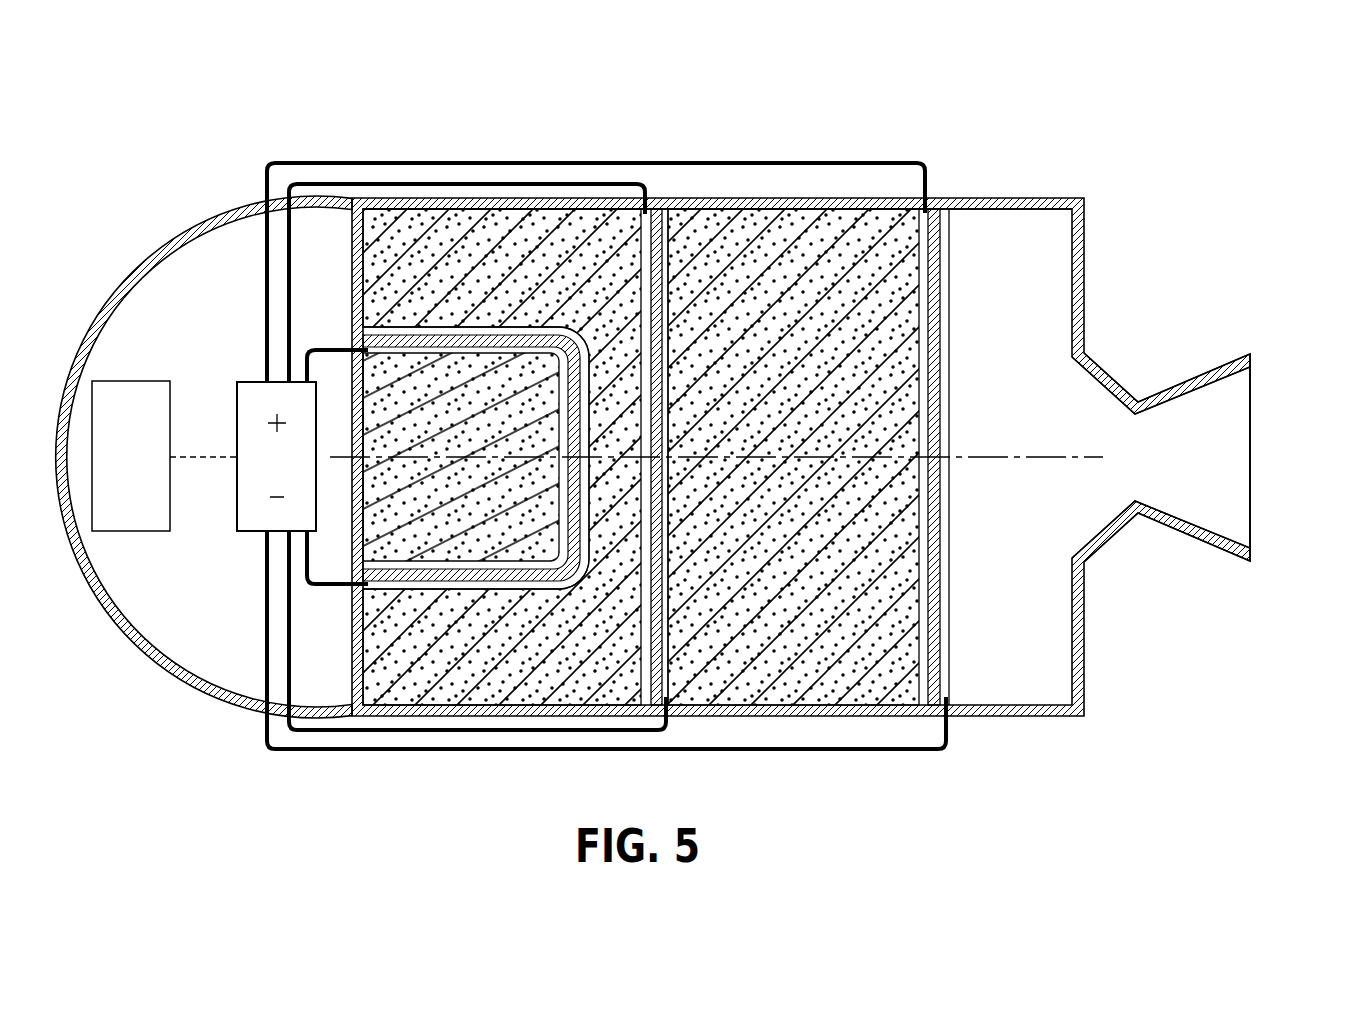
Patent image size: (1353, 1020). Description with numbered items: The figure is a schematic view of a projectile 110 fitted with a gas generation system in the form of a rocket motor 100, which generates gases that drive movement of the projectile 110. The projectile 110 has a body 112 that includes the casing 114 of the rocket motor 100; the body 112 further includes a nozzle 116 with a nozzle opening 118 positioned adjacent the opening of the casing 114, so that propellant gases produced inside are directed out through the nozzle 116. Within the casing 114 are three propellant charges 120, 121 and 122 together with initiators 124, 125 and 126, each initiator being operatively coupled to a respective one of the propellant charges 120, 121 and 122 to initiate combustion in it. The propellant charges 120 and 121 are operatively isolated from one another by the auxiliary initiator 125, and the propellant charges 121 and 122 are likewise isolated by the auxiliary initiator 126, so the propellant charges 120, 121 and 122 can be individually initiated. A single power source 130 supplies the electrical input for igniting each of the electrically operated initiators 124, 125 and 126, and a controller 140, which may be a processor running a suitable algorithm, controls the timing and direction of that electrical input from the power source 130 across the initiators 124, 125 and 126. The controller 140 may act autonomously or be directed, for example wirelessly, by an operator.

The rocket motor 100 is at (703, 421).
The projectile 110 is at (703, 421).
The body 112 is at (1025, 199).
The casing 114 is at (743, 210).
The nozzle 116 is at (1237, 366).
The nozzle opening 118 is at (1270, 432).
The propellant charge 120 is at (850, 387).
The propellant charge 121 is at (592, 276).
The propellant charge 122 is at (489, 403).
The initiator 124 is at (925, 637).
The auxiliary initiator 125 is at (648, 638).
The auxiliary initiator 126 is at (523, 588).
The power source 130 is at (236, 504).
The controller 140 is at (154, 468).